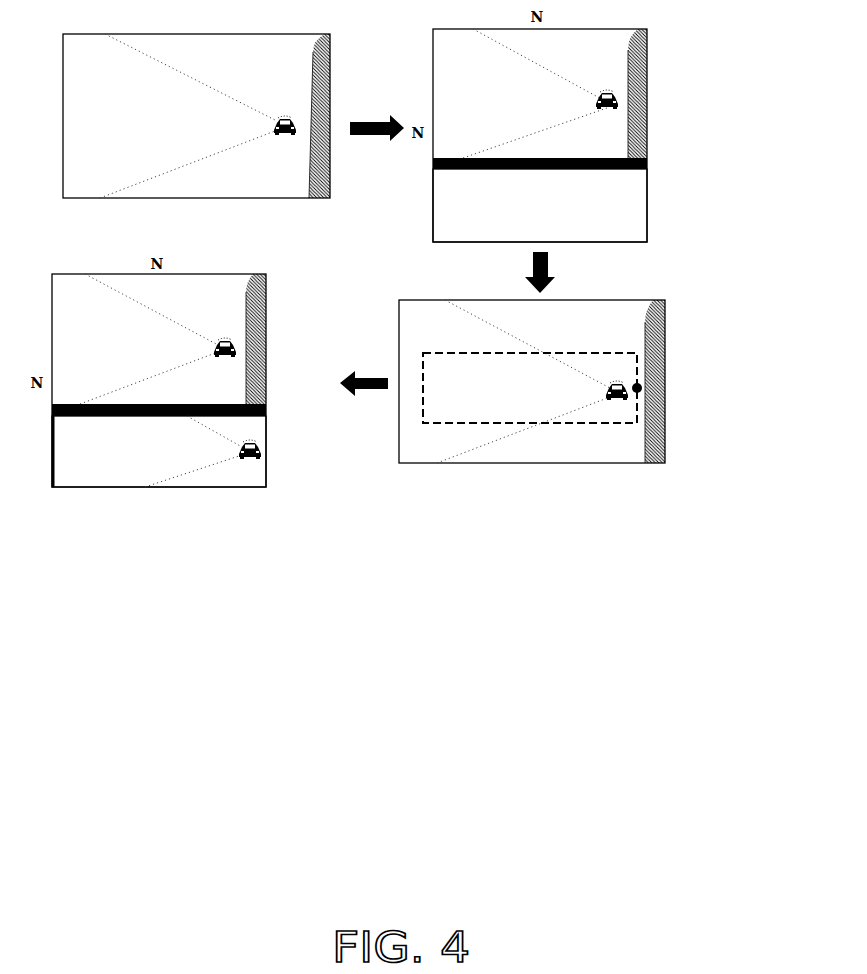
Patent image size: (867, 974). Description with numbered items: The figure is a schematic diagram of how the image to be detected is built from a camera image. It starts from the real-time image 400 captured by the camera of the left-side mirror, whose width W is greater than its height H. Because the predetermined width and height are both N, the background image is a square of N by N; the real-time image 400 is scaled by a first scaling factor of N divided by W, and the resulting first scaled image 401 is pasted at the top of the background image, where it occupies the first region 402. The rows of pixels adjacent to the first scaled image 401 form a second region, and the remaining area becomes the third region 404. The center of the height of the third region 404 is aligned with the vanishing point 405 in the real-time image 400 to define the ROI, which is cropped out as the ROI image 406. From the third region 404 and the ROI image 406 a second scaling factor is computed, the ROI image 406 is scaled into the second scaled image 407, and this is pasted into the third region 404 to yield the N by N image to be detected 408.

The real-time image 400 is at (354, 252).
The first scaled image 401 is at (272, 346).
The first region 402 is at (652, 97).
The third region 404 is at (652, 208).
The vanishing point 405 is at (646, 387).
The ROI image 406 is at (637, 425).
The second scaled image 407 is at (271, 444).
The image to be detected 408 is at (159, 464).